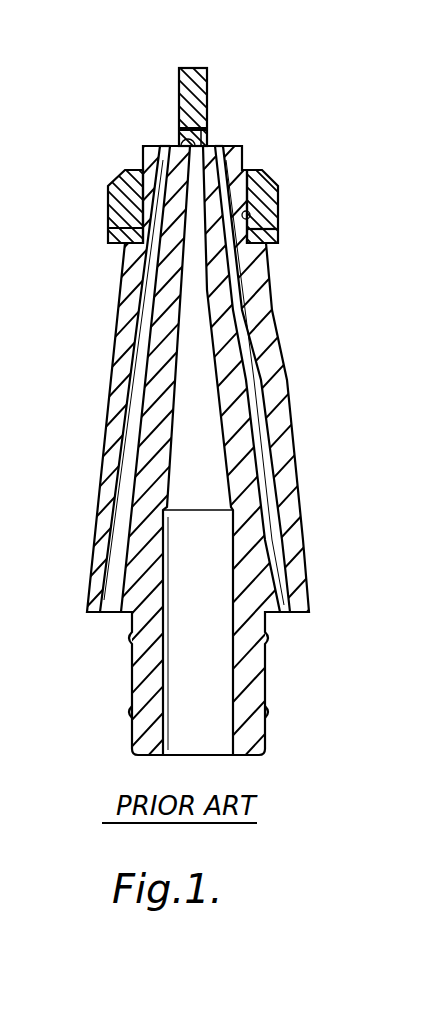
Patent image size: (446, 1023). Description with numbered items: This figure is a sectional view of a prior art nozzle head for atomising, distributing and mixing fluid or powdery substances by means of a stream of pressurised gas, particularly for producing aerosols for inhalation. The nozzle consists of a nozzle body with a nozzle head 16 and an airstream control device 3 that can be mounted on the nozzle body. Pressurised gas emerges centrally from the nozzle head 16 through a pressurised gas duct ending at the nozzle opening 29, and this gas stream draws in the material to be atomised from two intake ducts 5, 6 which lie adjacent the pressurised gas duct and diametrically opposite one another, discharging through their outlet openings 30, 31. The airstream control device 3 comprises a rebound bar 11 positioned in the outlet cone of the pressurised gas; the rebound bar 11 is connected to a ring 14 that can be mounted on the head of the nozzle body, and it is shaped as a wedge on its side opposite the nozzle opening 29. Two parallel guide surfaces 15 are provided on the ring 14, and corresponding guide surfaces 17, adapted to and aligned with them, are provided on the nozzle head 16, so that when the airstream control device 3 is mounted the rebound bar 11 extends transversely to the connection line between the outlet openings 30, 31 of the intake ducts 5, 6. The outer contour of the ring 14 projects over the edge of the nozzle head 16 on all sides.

The airstream control device 3 is at (110, 195).
The intake duct 5 is at (133, 432).
The intake duct 6 is at (258, 447).
The rebound bar 11 is at (197, 68).
The ring 14 is at (108, 238).
The guide surface 15 is at (280, 231).
The nozzle head 16 is at (279, 203).
The guide surface 17 is at (110, 230).
The nozzle opening 29 is at (179, 136).
The outlet opening 30 is at (166, 146).
The outlet opening 31 is at (222, 146).